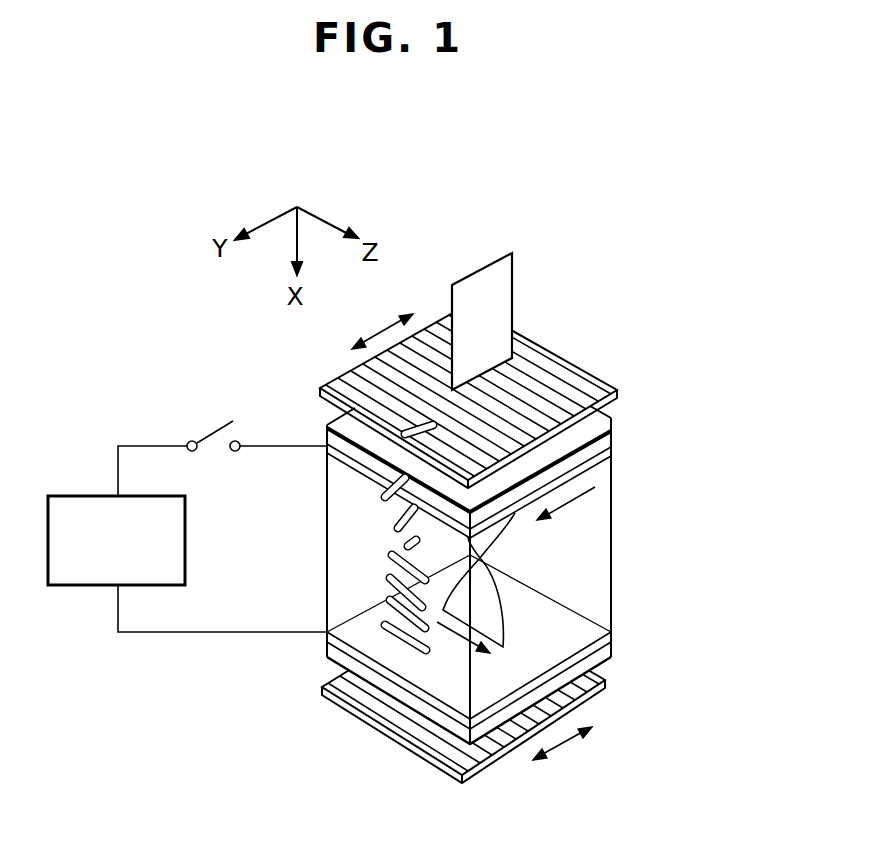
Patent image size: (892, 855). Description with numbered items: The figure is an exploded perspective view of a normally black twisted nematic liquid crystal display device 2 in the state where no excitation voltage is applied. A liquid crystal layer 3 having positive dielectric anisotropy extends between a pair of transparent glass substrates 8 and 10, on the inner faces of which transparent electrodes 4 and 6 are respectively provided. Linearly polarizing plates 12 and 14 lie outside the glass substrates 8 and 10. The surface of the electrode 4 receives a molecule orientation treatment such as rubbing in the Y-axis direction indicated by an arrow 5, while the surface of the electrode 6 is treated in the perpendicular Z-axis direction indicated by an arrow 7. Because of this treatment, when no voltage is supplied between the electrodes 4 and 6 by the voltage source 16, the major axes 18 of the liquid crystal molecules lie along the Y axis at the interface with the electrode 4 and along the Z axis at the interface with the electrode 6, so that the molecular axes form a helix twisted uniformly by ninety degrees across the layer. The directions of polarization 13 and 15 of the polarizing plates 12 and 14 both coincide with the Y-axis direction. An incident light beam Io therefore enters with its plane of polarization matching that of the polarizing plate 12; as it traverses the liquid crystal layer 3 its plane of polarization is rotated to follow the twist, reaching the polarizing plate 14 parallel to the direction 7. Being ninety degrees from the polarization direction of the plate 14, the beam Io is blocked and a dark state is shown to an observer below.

The twisted nematic liquid crystal display device 2 is at (707, 372).
The liquid crystal layer 3 is at (612, 570).
The transparent electrode 4 is at (612, 458).
The arrow 5 is at (566, 500).
The transparent electrode 6 is at (610, 633).
The arrow 7 is at (452, 615).
The transparent glass substrate 8 is at (612, 434).
The transparent glass substrate 10 is at (608, 655).
The linearly polarizing plate 12 is at (590, 352).
The direction of polarization 13 is at (378, 325).
The linearly polarizing plate 14 is at (607, 690).
The direction of polarization 15 is at (568, 742).
The voltage source 16 is at (186, 551).
The major axes of the liquid crystal molecules 18 is at (398, 438).
The incident light beam Io is at (513, 270).